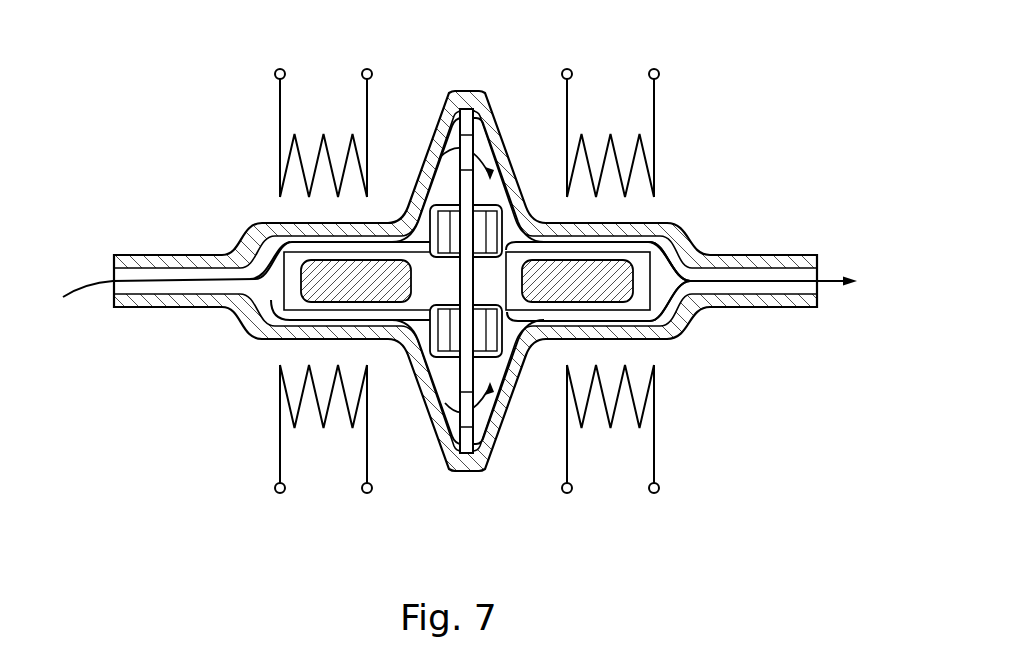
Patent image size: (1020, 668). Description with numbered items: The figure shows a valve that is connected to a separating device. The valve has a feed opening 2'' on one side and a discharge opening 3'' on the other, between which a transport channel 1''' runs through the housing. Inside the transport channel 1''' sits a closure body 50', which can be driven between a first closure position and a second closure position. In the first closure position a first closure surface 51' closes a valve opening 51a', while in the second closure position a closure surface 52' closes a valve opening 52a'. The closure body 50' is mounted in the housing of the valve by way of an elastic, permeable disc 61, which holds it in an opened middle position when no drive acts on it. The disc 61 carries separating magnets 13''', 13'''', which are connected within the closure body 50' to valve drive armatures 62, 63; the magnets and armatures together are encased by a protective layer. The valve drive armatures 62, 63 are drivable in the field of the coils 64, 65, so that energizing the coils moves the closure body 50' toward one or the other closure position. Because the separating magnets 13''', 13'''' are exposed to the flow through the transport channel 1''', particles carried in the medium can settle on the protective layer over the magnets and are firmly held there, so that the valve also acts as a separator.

The transport channel 1''' is at (501, 226).
The feed opening 2'' is at (145, 254).
The discharge opening 3'' is at (790, 337).
The separating magnet 13''' is at (522, 141).
The separating magnet 13'''' is at (409, 421).
The closure body 50' is at (487, 388).
The first closure surface 51' is at (300, 309).
The valve opening 51a' is at (205, 234).
The closure surface 52' is at (657, 232).
The valve opening 52a' is at (716, 236).
The elastic, permeable disc 61 is at (458, 182).
The valve drive armature 62 is at (322, 277).
The valve drive armature 63 is at (612, 285).
The coil 64 is at (280, 112).
The coil 65 is at (654, 112).